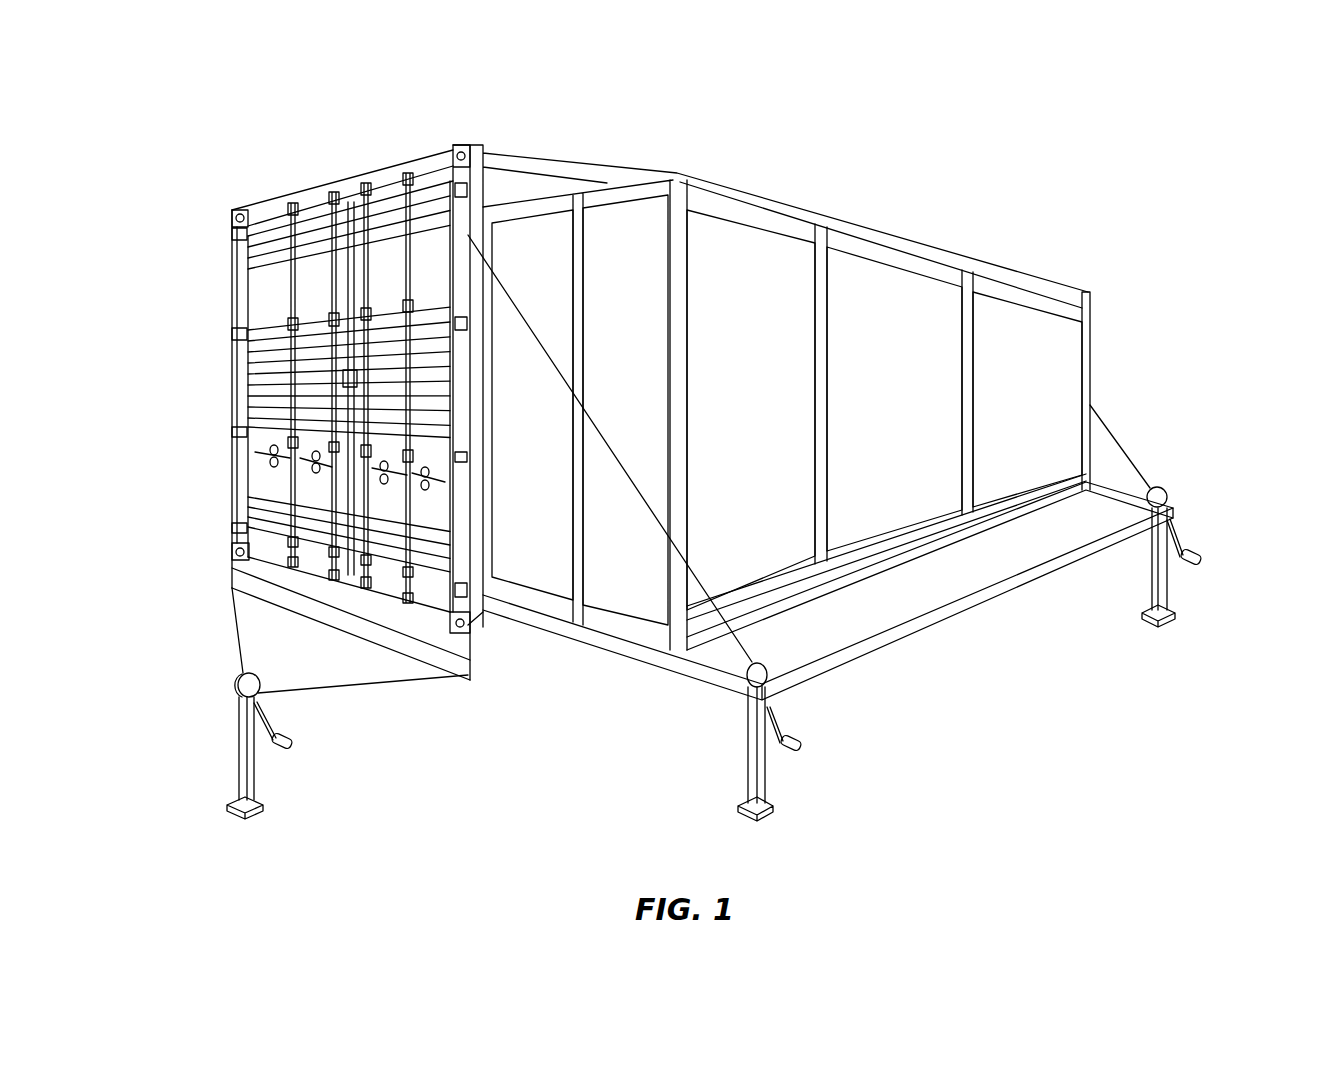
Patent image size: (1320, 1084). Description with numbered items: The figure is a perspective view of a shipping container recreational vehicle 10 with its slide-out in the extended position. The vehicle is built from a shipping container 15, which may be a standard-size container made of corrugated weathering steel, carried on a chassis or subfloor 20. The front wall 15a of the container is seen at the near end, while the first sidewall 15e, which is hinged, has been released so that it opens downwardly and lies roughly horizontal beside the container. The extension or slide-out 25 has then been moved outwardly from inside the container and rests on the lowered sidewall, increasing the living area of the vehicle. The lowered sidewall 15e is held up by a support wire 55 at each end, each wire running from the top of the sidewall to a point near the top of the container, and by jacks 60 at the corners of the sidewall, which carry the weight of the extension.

The shipping container recreational vehicle 10 is at (288, 158).
The shipping container 15 is at (232, 300).
The front wall 15a is at (273, 478).
The first sidewall 15e is at (893, 630).
The chassis or subfloor 20 is at (230, 585).
The extension or slide-out 25 is at (644, 670).
The support wire 55 is at (740, 640).
The jacks 60 is at (780, 802).